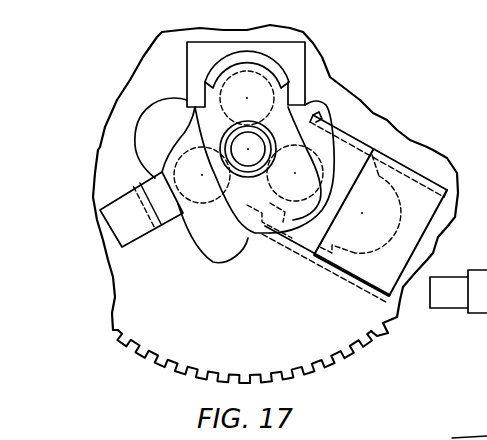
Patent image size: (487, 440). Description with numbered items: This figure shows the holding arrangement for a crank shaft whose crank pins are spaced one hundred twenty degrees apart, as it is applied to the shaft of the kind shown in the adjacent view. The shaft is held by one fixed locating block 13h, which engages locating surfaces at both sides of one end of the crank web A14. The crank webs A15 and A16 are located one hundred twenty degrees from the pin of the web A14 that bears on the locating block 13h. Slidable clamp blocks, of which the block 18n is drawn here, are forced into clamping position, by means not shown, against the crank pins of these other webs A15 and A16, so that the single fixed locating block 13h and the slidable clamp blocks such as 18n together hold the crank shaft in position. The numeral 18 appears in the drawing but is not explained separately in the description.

The fixed locating block 13h is at (298, 63).
The crank web A15 is at (178, 153).
The slidable clamp block 18n is at (147, 182).
The crank web A16 is at (330, 150).
The slide block 18 is at (403, 180).
The crank web A14 is at (240, 222).